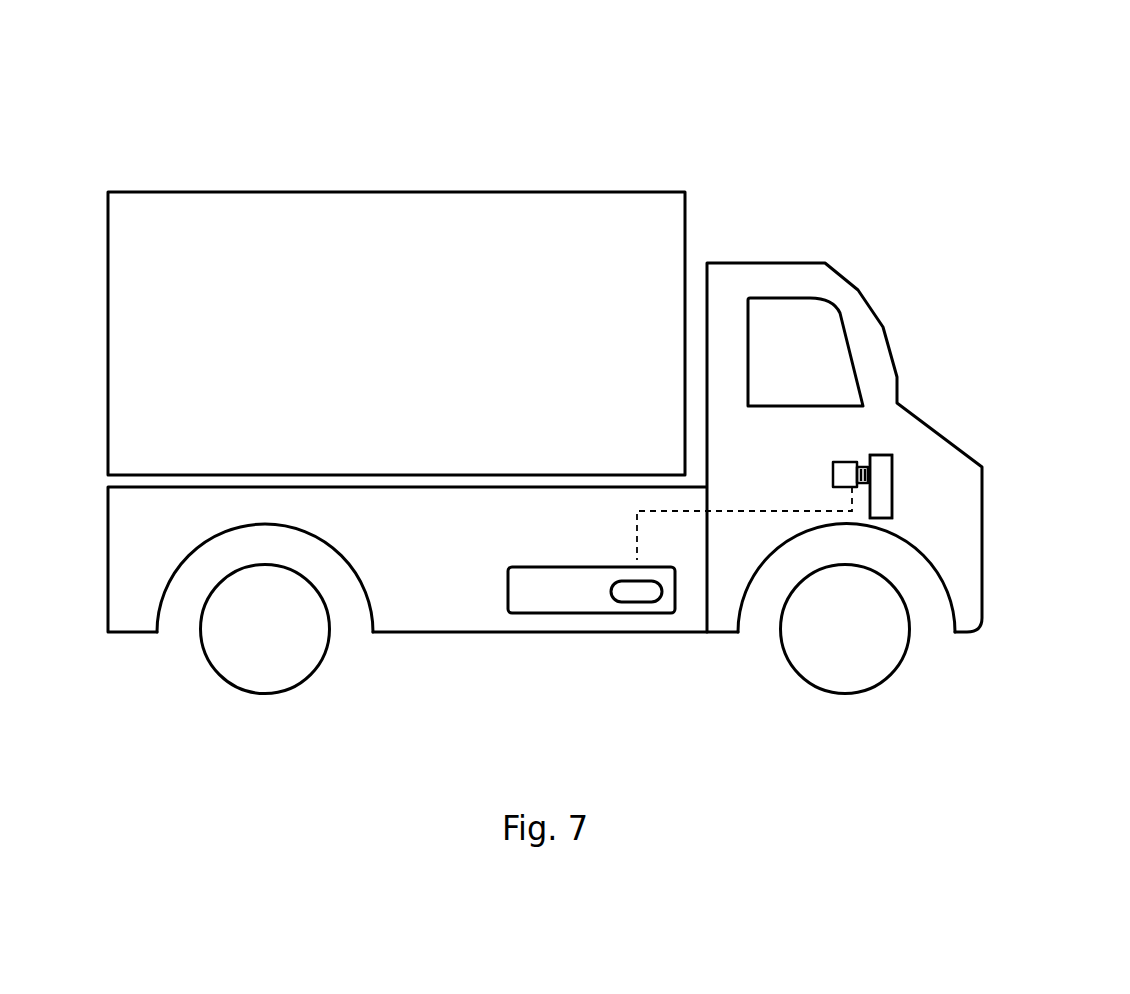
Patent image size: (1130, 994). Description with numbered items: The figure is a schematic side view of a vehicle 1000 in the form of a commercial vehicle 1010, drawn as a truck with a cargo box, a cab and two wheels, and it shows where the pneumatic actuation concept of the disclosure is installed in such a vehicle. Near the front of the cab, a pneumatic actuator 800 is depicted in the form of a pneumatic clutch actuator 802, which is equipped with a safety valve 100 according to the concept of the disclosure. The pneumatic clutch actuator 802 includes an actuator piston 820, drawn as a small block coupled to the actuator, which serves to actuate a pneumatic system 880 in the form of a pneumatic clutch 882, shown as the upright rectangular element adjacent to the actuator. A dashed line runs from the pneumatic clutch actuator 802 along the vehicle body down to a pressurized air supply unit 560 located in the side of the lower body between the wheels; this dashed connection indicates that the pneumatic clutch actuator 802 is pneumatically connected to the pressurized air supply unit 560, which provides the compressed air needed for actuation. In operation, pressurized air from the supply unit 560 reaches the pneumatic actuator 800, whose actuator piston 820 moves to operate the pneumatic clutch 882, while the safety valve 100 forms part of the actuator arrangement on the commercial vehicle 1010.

The vehicle 1000 is at (545, 356).
The commercial vehicle 1010 is at (980, 42).
The pressurized air supply unit 560 is at (647, 592).
The pneumatic actuator 800 is at (833, 466).
The pneumatic clutch actuator 802 is at (855, 460).
The actuator piston 820 is at (983, 498).
The safety valve 100 is at (878, 474).
The pneumatic system 880 is at (983, 521).
The pneumatic clutch 882 is at (885, 501).